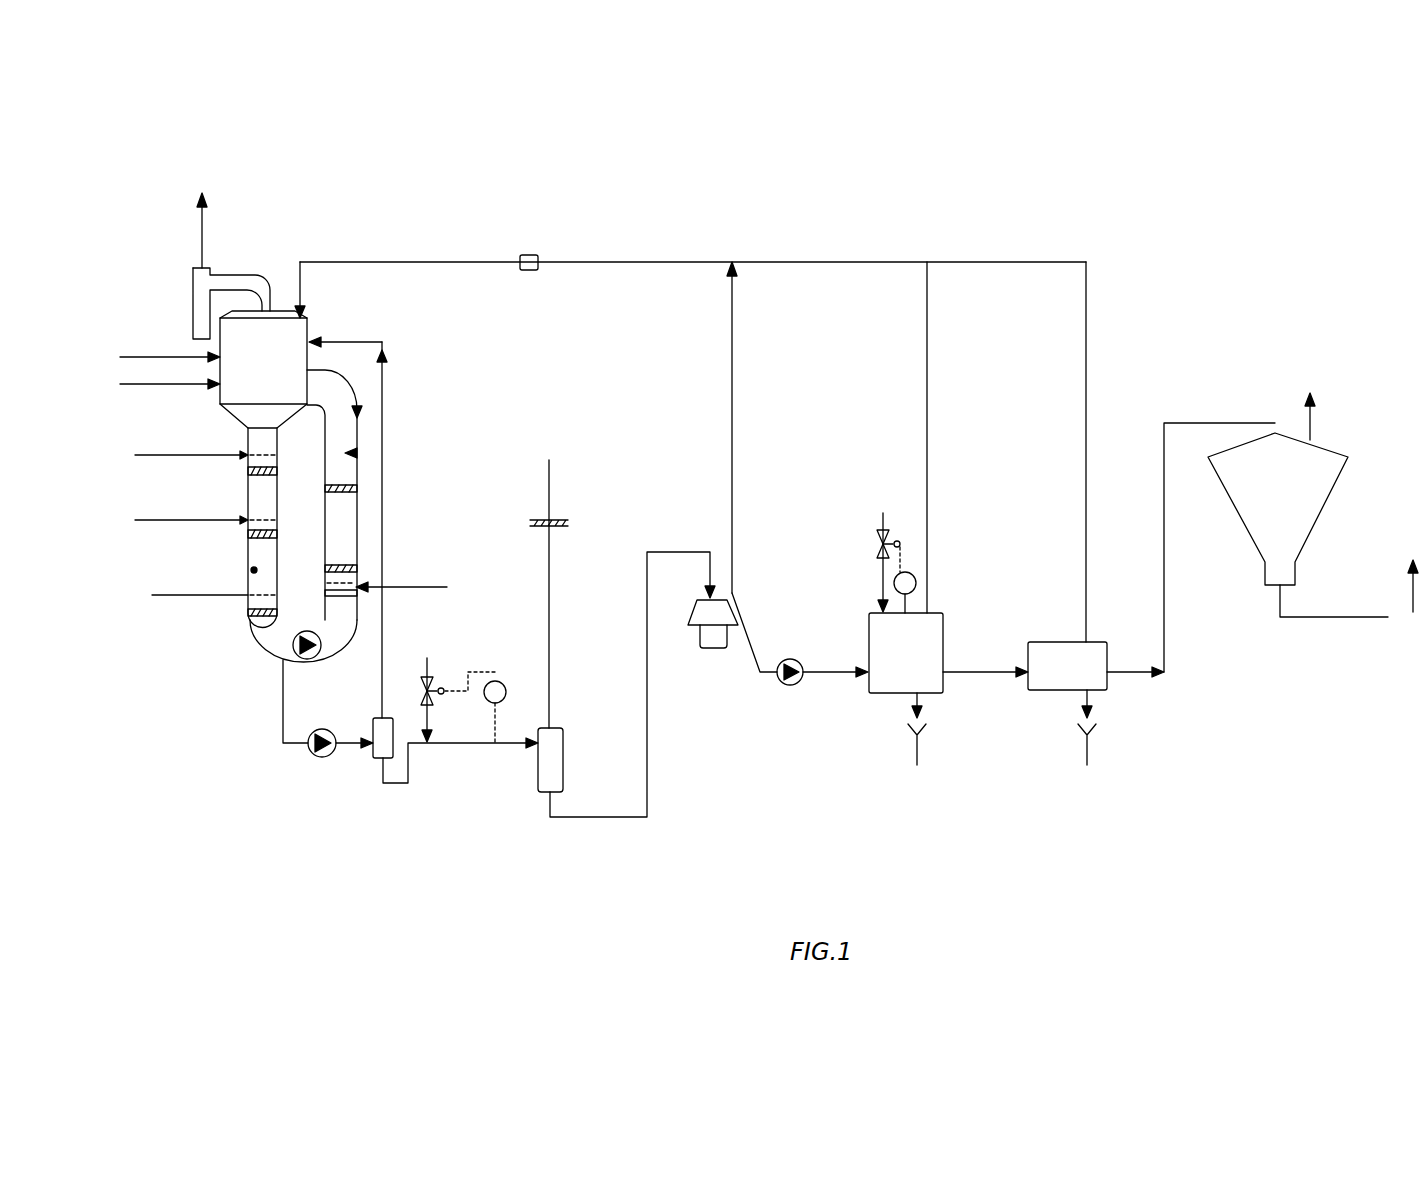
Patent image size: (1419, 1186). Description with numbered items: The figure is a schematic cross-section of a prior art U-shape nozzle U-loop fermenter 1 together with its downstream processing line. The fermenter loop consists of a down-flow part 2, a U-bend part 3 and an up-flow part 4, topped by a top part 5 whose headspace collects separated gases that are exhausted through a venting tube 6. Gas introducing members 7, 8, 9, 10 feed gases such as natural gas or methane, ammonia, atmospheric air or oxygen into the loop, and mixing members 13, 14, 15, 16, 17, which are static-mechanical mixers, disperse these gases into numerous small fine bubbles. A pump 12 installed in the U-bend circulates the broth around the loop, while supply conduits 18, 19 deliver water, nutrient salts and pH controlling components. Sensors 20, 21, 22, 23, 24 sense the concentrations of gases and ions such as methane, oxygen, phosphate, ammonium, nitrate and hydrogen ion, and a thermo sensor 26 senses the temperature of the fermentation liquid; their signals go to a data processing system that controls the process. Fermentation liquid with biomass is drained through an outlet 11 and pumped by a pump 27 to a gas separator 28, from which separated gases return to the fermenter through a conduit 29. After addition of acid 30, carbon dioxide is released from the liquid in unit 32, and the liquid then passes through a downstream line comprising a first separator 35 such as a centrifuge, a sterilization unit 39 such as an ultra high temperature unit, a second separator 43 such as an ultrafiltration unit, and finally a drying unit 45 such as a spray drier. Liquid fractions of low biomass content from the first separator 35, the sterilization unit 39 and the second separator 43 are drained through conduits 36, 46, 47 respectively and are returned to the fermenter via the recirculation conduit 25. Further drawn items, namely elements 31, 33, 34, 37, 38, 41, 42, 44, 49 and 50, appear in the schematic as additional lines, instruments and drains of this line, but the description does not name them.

The U-loop fermenter 1 is at (363, 408).
The down-flow part 2 is at (248, 500).
The U-bend part 3 is at (262, 642).
The up-flow part 4 is at (357, 530).
The top part 5 is at (312, 326).
The venting tube 6 is at (193, 278).
The gas introducing member 7 is at (246, 458).
The gas introducing member 8 is at (246, 523).
The gas introducing member 9 is at (246, 598).
The gas introducing member 10 is at (362, 583).
The outlet 11 is at (270, 722).
The pump 12 is at (322, 650).
The mixing member 13 is at (248, 474).
The mixing member 14 is at (248, 538).
The mixing member 15 is at (248, 616).
The mixing member 16 is at (357, 570).
The mixing member 17 is at (357, 489).
The supply conduit 18 is at (182, 355).
The supply conduit 19 is at (187, 388).
The sensor 20 is at (278, 437).
The sensor 21 is at (272, 500).
The sensor 22 is at (251, 571).
The sensor 23 is at (357, 604).
The sensor 24 is at (527, 272).
The recirculation conduit 25 is at (600, 264).
The thermo sensor 26 is at (357, 453).
The pump 27 is at (314, 757).
The gas separator 28 is at (372, 758).
The conduit 29 is at (383, 655).
The acid addition 30 is at (432, 680).
The controller 31 is at (503, 684).
The CO2 release unit 32 is at (563, 748).
The feed line 33 is at (550, 590).
The transfer line 34 is at (647, 790).
The first separator 35 is at (728, 605).
The conduit 36 is at (733, 425).
The suspension line 37 is at (748, 630).
The pump 38 is at (782, 685).
The sterilization unit 39 is at (893, 695).
The controller 41 is at (914, 575).
The transfer line 42 is at (1000, 675).
The second separator 43 is at (1055, 640).
The gas line 44 is at (1165, 604).
The drying unit 45 is at (1313, 505).
The conduit 46 is at (928, 400).
The conduit 47 is at (1088, 385).
The drain outlet 49 is at (918, 750).
The drain outlet 50 is at (1088, 748).